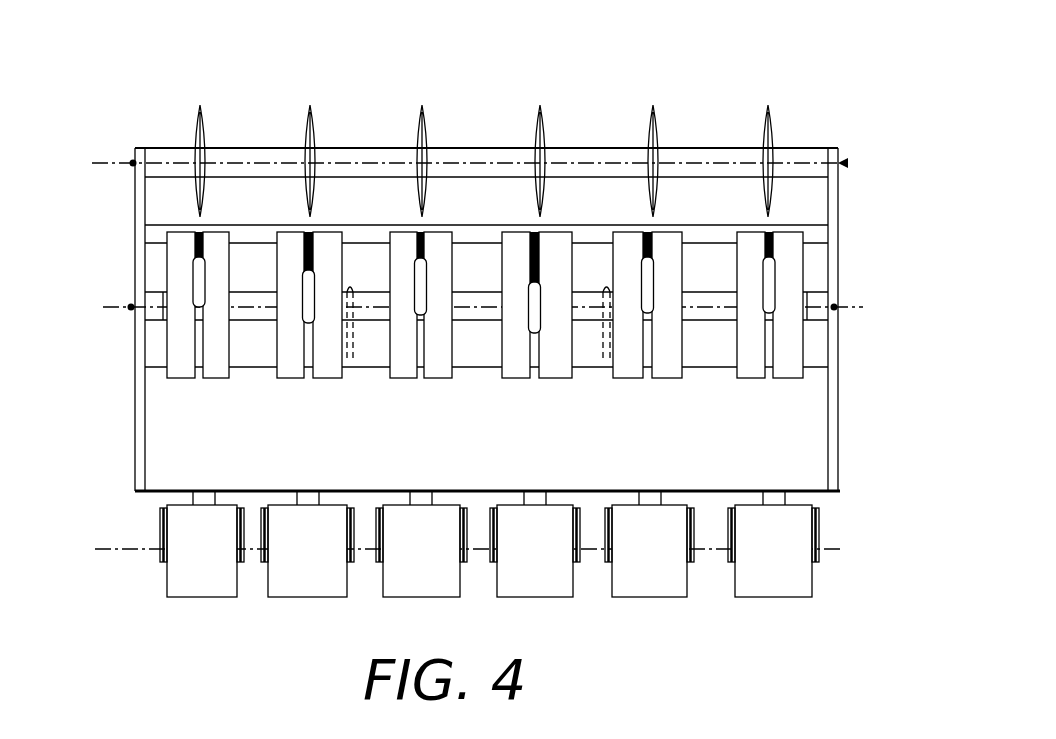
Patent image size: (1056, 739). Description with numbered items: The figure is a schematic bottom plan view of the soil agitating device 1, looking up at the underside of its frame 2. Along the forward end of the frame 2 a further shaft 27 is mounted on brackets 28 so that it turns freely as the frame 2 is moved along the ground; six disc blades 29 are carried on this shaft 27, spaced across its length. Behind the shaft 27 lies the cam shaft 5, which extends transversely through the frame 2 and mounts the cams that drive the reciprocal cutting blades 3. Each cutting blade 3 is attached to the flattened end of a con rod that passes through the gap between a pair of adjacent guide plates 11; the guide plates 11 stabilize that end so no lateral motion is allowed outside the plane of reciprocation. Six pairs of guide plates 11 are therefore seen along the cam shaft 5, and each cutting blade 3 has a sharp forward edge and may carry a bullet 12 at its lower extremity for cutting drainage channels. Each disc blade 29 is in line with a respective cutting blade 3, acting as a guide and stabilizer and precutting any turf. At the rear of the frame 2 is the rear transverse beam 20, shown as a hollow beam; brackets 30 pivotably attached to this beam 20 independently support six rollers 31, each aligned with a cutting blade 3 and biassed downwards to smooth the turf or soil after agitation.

The agitating device 1 is at (892, 308).
The frame 2 is at (137, 424).
The cutting blade 3 is at (308, 286).
The cam shaft 5 is at (147, 320).
The guide plates 11 is at (217, 241).
The bullet 12 is at (531, 283).
The rear transverse beam 20 is at (815, 404).
The further shaft 27 is at (228, 157).
The brackets 28 is at (133, 163).
The disc blades 29 is at (317, 125).
The brackets 30 is at (205, 499).
The rollers 31 is at (318, 577).